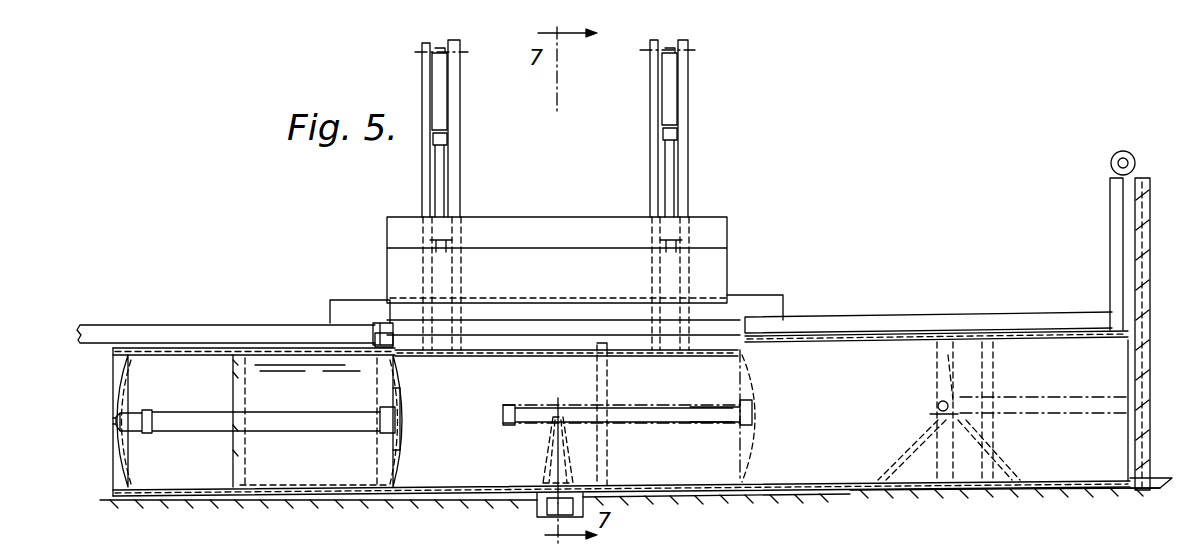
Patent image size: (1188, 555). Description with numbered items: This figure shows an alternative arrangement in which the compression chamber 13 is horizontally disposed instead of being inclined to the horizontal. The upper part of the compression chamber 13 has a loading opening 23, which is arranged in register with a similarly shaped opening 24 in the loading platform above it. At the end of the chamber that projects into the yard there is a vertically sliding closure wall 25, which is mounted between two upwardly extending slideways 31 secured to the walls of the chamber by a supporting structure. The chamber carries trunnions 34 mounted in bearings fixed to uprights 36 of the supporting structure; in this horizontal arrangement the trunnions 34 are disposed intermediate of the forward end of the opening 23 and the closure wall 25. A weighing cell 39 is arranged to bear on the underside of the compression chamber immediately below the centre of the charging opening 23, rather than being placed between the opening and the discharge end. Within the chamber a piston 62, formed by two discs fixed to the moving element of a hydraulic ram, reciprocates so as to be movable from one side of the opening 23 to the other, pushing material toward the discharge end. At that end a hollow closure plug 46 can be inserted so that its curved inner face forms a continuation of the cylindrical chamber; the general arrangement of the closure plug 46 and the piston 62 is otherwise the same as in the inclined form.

The compression chamber 13 is at (193, 328).
The loading opening 23 is at (392, 348).
The opening in the loading platform 24 is at (386, 340).
The closure wall 25 is at (1148, 450).
The slideways 31 is at (1135, 272).
The trunnions 34 is at (968, 333).
The uprights 36 is at (938, 450).
The weighing cell 39 is at (565, 502).
The hollow closure plug 46 is at (705, 233).
The piston 62 is at (277, 483).